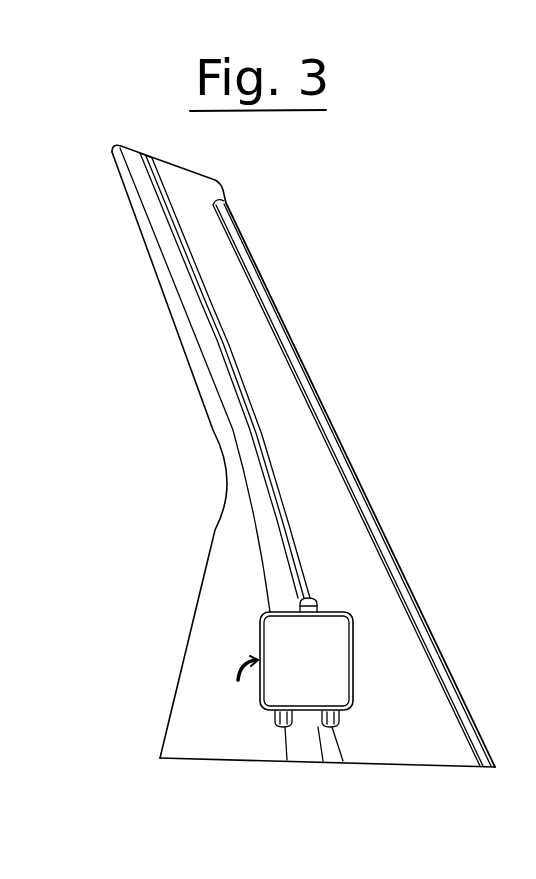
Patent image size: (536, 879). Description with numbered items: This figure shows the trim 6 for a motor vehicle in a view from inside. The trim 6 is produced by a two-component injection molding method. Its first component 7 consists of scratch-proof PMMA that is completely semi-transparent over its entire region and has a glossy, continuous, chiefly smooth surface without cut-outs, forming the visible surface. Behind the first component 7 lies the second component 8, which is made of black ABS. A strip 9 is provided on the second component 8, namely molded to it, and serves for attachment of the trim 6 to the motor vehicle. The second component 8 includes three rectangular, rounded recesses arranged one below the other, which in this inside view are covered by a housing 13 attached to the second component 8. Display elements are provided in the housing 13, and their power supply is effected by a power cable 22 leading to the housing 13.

The trim 6 is at (355, 279).
The first component 7 is at (300, 518).
The second component 8 is at (333, 517).
The strip 9 is at (433, 660).
The housing 13 is at (340, 677).
The power cable 22 is at (245, 663).